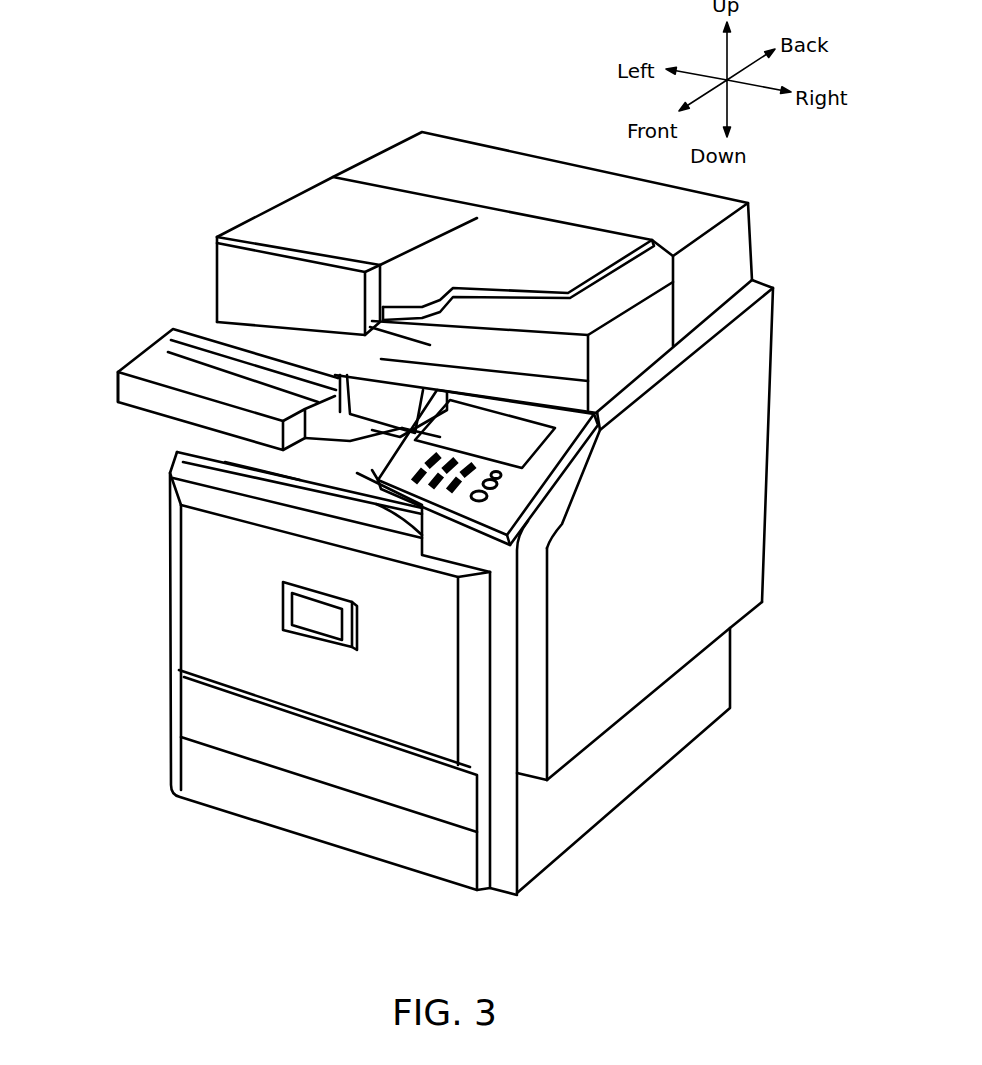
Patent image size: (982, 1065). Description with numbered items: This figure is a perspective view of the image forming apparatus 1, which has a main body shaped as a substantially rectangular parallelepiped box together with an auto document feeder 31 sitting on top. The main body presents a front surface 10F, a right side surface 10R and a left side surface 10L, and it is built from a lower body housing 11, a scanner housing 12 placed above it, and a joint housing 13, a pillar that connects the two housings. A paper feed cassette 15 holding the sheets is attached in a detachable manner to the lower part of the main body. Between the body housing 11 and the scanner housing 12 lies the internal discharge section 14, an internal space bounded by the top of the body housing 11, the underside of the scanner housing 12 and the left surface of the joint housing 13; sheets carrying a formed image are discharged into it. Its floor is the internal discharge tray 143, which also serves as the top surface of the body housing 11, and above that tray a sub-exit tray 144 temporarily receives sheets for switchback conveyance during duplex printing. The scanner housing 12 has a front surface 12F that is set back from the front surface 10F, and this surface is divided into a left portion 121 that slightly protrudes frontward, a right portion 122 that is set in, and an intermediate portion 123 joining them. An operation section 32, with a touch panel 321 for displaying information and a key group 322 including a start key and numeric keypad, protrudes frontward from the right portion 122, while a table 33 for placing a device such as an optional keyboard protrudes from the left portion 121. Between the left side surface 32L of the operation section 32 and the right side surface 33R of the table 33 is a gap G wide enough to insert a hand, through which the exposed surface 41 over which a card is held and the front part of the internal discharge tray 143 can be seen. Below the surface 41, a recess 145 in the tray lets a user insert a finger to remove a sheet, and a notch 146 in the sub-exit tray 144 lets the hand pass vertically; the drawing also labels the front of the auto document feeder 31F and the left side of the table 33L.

The image forming apparatus 1 is at (169, 82).
The front surface of the main body 10F is at (289, 625).
The left side surface of the main body 10L is at (172, 583).
The right side surface of the main body 10R is at (728, 528).
The body housing 11 is at (507, 680).
The scanner housing 12 is at (632, 412).
The front surface of the scanner housing 12F is at (611, 442).
The joint housing 13 is at (493, 552).
The internal discharge section 14 is at (165, 433).
The paper feed cassette 15 is at (205, 712).
The auto document feeder 31 is at (295, 197).
The front surface of image reading unit 31F is at (223, 285).
The operation section 32 is at (508, 520).
The left side surface of the operation section 32L is at (380, 455).
The touch panel 321 is at (523, 443).
The key group 322 is at (521, 496).
The table 33 is at (187, 379).
The left end of sheet tray 33L is at (117, 372).
The right side surface of the table 33R is at (300, 421).
The surface over which a card is held 41 is at (377, 398).
The left portion 121 is at (247, 342).
The right portion 122 is at (490, 392).
The intermediate portion 123 is at (427, 393).
The internal discharge tray 143 is at (293, 458).
The sub-exit tray 144 is at (322, 432).
The recess 145 is at (337, 468).
The notch 146 is at (327, 430).
The gap G is at (331, 466).